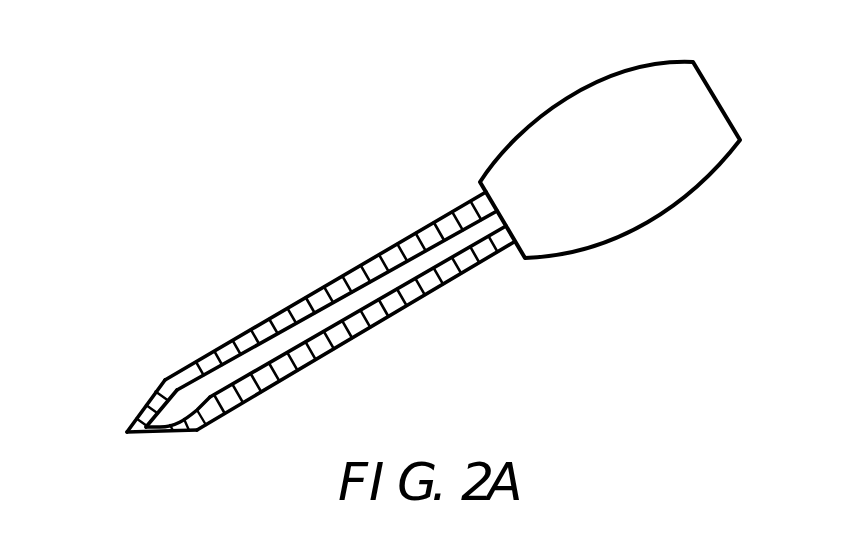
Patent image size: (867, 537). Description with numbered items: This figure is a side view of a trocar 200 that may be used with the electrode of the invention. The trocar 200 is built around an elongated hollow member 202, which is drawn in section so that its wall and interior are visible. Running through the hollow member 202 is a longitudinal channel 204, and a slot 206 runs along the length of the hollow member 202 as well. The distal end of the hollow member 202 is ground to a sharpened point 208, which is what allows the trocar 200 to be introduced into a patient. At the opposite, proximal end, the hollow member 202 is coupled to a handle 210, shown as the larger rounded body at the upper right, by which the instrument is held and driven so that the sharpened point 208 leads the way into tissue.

The trocar 200 is at (223, 138).
The hollow member 202 is at (339, 308).
The longitudinal channel 204 is at (114, 395).
The slot 206 is at (302, 366).
The sharpened point 208 is at (120, 472).
The handle 210 is at (610, 129).